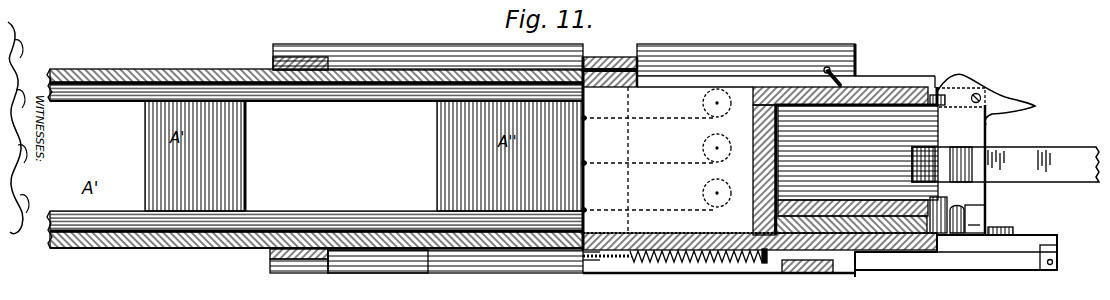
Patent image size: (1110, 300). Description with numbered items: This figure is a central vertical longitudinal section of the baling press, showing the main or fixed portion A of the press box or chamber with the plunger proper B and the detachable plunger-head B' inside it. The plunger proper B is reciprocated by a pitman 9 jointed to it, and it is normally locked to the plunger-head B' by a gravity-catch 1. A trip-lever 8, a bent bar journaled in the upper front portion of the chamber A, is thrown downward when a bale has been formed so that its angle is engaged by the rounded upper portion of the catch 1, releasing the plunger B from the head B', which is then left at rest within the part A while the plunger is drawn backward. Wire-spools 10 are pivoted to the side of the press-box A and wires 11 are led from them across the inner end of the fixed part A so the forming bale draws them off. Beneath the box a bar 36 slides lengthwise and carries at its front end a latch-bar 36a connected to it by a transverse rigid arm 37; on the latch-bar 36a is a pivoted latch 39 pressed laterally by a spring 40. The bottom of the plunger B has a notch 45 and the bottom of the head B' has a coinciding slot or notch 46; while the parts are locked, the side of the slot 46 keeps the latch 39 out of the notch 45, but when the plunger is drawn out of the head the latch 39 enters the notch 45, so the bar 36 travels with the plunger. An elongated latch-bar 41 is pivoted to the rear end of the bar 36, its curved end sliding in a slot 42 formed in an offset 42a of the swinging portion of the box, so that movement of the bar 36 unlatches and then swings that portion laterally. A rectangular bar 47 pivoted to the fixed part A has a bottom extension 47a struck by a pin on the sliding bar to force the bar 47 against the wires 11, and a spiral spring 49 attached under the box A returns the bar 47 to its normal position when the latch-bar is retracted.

The gravity-catch 1 is at (966, 82).
The trip-lever 8 is at (831, 68).
The pitman 9 is at (1005, 164).
The wire-spools 10 is at (743, 160).
The wires 11 is at (604, 116).
The sliding bar 36 is at (910, 262).
The latch-bar 36a is at (1050, 240).
The transverse rigid arm 37 is at (1058, 254).
The pivoted latch 39 is at (987, 213).
The spring 40 is at (1007, 236).
The elongated latch-bar 41 is at (400, 275).
The slot 42 is at (334, 299).
The offset 42a is at (266, 299).
The notch 45 is at (945, 218).
The notch (slot) of plunger-head 46 is at (947, 234).
The rectangular bar 47 is at (596, 264).
The bottom extension 47a is at (594, 268).
The spiral spring 49 is at (717, 264).
The main or fixed portion of press-box A is at (384, 50).
The plunger proper B is at (880, 170).
The plunger-head B' is at (849, 142).